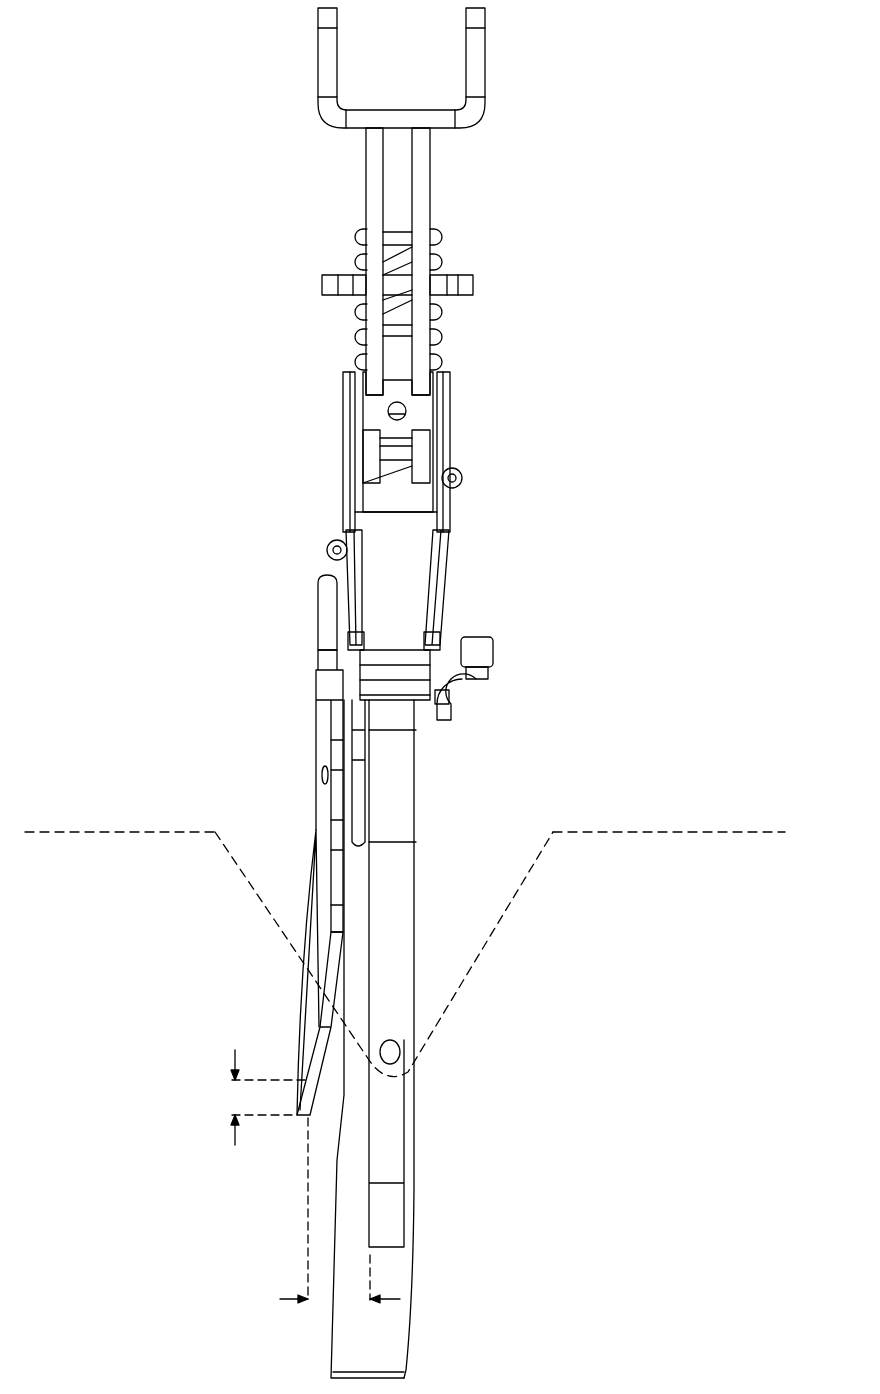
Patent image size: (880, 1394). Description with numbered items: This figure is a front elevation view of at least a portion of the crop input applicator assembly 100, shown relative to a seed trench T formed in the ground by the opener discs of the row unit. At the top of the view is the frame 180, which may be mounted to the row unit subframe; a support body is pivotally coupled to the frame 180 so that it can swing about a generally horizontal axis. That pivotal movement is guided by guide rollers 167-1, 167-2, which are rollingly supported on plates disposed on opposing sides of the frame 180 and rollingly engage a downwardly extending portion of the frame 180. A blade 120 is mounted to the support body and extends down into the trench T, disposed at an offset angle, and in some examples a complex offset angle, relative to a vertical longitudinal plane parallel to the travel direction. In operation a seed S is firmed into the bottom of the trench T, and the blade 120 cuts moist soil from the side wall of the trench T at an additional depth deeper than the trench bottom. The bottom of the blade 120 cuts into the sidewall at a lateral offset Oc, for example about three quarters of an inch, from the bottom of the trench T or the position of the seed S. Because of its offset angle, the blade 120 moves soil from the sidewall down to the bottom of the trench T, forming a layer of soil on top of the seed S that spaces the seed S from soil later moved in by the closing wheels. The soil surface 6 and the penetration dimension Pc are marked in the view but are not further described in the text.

The crop input applicator assembly 100 is at (600, 120).
The frame 180 is at (432, 190).
The guide roller 167-1 is at (458, 467).
The guide roller 167-2 is at (333, 540).
The blade 120 is at (323, 752).
The soil surface 6 is at (700, 833).
The seed trench T is at (470, 898).
The seed S is at (400, 1043).
The coulter penetration depth Pc is at (237, 1130).
The lateral offset Oc is at (322, 1215).